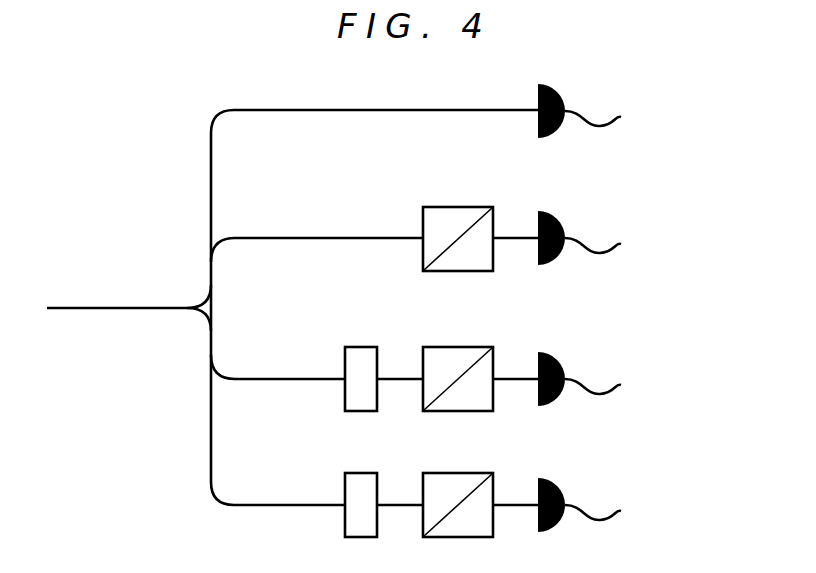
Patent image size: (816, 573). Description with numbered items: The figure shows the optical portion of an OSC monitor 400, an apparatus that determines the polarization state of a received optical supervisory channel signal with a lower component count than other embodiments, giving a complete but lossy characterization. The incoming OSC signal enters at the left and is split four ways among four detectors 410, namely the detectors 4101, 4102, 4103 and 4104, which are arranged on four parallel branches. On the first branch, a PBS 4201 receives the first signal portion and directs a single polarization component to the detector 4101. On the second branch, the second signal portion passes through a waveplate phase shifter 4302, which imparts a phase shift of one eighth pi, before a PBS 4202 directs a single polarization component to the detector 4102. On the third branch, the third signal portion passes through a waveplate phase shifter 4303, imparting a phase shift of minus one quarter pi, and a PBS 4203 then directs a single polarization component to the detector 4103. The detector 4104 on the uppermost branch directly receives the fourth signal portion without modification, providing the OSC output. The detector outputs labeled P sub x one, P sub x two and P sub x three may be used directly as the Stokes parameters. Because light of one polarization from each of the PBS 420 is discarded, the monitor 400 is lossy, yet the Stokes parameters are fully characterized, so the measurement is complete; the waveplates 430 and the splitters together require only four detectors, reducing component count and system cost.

The OSC monitor 400 is at (122, 106).
The detectors 410 is at (636, 295).
The detector 4101 is at (560, 222).
The detector 4102 is at (560, 363).
The detector 4103 is at (560, 489).
The detector 4104 is at (560, 95).
The polarizing beam splitters 420 is at (467, 356).
The PBS 4201 is at (447, 207).
The PBS 4202 is at (447, 347).
The PBS 4203 is at (447, 473).
The waveplate phase shifters 430 is at (341, 435).
The waveplate π/8 phase shifter 4302 is at (345, 393).
The waveplate −π/4 phase shifter 4303 is at (345, 519).